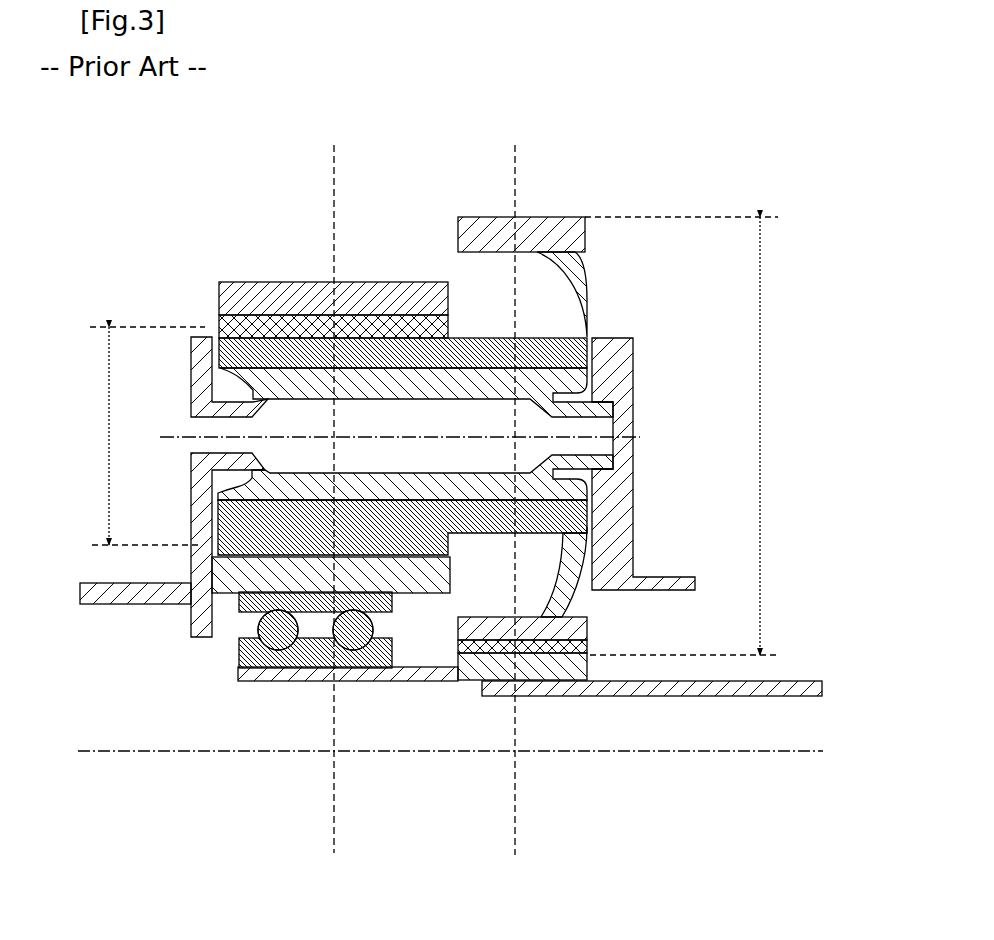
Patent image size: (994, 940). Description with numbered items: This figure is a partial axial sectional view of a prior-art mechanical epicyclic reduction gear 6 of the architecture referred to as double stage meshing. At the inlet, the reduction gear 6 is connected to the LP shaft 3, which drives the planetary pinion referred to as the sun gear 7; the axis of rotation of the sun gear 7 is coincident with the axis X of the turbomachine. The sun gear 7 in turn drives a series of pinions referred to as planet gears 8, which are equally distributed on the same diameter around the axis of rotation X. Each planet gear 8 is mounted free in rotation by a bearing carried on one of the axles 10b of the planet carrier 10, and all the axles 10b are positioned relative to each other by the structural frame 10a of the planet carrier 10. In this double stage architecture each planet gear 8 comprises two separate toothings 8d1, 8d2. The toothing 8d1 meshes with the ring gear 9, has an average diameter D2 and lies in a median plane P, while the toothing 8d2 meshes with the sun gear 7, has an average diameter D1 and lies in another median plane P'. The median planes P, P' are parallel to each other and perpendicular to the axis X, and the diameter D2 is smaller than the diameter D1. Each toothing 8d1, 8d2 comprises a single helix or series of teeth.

The LP shaft 3 is at (762, 700).
The epicyclic reduction gear 6 is at (753, 131).
The sun gear 7 is at (461, 682).
The planet gear 8 is at (592, 306).
The toothing 8d1 is at (250, 304).
The toothing 8d2 is at (579, 216).
The ring gear 9 is at (315, 284).
The planet carrier 10 is at (640, 385).
The structural frame 10a is at (625, 480).
The axle 10b is at (523, 386).
The average diameter D1 is at (766, 441).
The average diameter D2 is at (104, 446).
The median plane P is at (363, 499).
The median plane P' is at (544, 496).
The axis of rotation of the turbomachine X is at (800, 753).